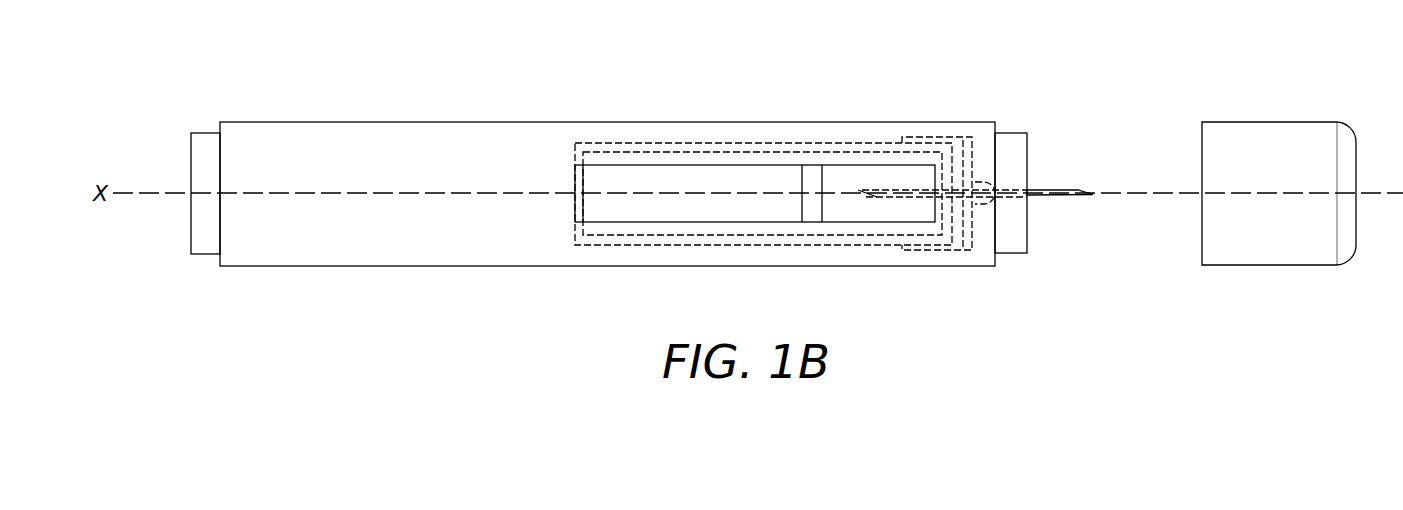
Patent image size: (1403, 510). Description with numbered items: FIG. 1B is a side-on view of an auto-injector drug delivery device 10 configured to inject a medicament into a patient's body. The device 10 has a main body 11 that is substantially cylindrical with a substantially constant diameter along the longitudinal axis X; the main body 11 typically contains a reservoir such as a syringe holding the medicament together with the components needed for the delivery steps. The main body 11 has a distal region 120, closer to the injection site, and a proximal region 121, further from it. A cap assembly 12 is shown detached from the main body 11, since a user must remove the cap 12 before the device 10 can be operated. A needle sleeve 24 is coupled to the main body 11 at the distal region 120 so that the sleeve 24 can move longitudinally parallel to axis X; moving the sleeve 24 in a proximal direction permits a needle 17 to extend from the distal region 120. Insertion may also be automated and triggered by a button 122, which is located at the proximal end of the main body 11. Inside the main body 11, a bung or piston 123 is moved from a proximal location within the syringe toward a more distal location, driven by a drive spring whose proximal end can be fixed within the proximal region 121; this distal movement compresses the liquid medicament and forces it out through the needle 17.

The drug delivery device 10 is at (958, 76).
The main body 11 is at (805, 130).
The cap assembly 12 is at (1272, 130).
The needle 17 is at (1068, 190).
The needle sleeve 24 is at (1018, 143).
The distal region 120 is at (980, 257).
The proximal region 121 is at (240, 257).
The button 122 is at (205, 245).
The piston 123 is at (812, 212).